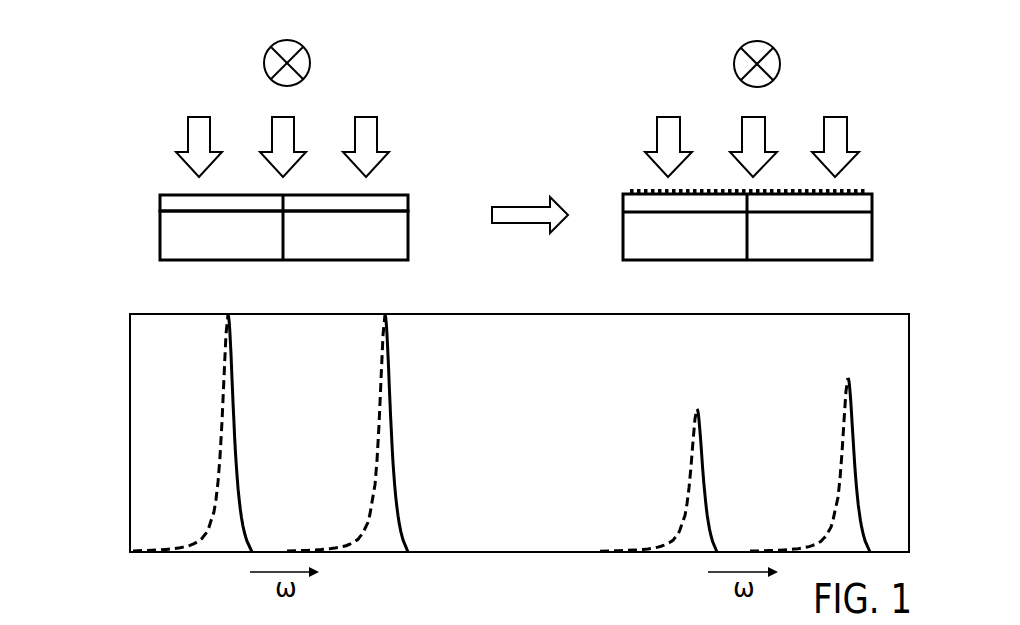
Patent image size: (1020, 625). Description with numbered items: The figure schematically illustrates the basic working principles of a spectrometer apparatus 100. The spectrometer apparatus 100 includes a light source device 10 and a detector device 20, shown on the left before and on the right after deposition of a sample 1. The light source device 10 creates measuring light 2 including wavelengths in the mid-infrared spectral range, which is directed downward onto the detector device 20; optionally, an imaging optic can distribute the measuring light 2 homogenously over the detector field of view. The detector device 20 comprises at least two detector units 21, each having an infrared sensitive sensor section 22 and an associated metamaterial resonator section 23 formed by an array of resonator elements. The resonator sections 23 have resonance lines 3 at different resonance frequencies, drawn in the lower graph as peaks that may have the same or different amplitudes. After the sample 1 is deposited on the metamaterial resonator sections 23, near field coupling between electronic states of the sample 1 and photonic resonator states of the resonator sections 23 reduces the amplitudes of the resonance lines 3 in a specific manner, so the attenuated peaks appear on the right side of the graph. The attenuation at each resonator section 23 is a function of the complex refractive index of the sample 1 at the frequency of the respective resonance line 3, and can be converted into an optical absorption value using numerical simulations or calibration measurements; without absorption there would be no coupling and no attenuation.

The spectrometer apparatus 100 is at (130, 100).
The light source device 10 is at (264, 64).
The measuring light 2 is at (254, 150).
The detector device 20 is at (107, 192).
The metamaterial resonator section 23 is at (190, 205).
The infrared sensitive sensor section 22 is at (190, 228).
The detector unit 21 is at (162, 263).
The sample 1 is at (650, 192).
The resonance line 3 is at (222, 477).